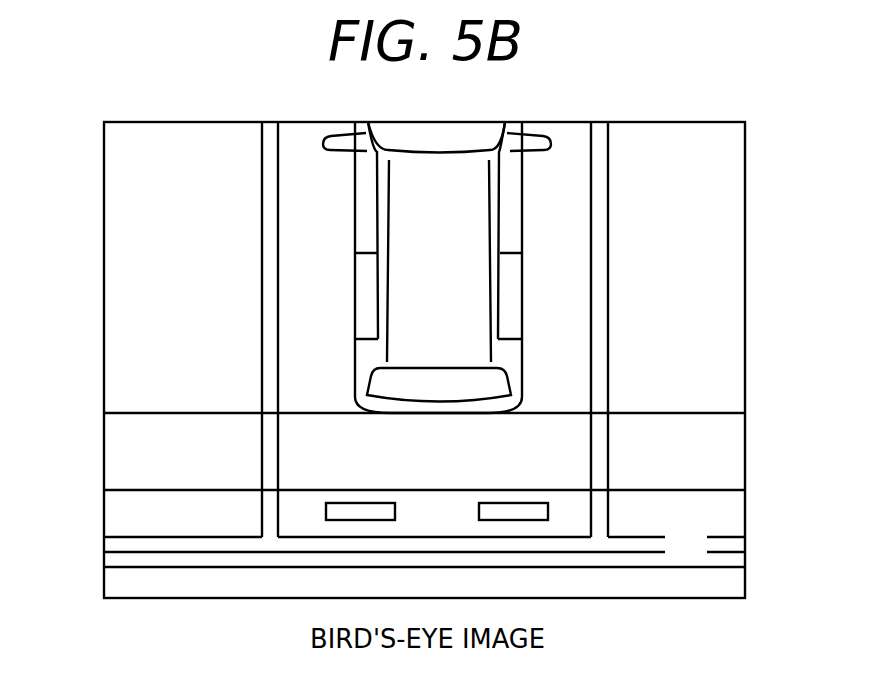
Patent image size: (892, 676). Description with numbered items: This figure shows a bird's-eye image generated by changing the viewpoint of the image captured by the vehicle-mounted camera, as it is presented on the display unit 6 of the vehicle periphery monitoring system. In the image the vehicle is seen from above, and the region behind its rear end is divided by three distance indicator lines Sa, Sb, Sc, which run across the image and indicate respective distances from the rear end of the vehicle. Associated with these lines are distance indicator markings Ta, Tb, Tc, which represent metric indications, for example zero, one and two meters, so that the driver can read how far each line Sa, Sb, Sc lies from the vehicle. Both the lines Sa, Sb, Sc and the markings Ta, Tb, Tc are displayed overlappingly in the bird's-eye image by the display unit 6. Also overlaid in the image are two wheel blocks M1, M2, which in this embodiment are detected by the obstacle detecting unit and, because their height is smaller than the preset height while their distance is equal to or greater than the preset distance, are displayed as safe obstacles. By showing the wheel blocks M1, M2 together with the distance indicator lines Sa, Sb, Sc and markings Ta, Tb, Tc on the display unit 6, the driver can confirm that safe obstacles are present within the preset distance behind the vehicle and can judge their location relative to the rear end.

The display unit 6 is at (745, 323).
The distance indicator line Sa is at (130, 413).
The distance indicator line Sb is at (130, 490).
The distance indicator line Sc is at (130, 567).
The distance indicator marking Ta is at (713, 391).
The distance indicator marking Tb is at (713, 474).
The distance indicator marking Tc is at (713, 544).
The wheel block M1 is at (360, 510).
The wheel block M2 is at (518, 510).